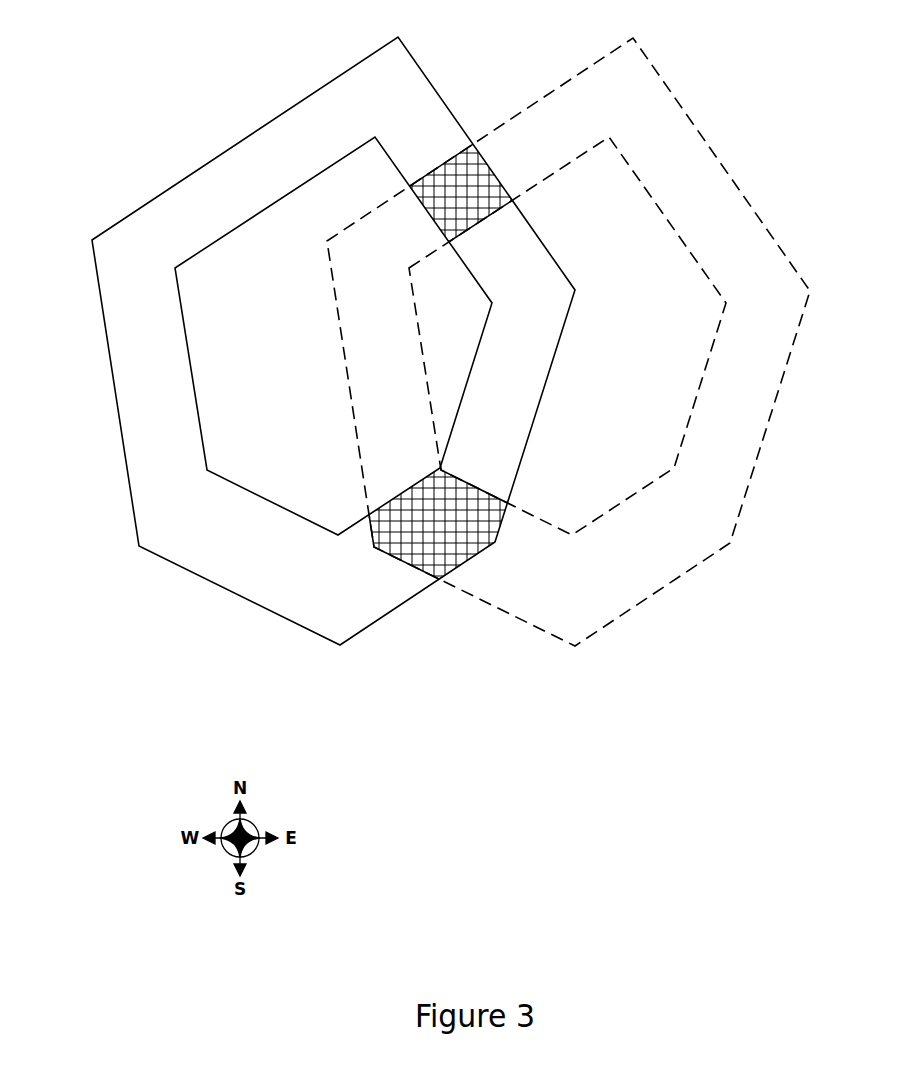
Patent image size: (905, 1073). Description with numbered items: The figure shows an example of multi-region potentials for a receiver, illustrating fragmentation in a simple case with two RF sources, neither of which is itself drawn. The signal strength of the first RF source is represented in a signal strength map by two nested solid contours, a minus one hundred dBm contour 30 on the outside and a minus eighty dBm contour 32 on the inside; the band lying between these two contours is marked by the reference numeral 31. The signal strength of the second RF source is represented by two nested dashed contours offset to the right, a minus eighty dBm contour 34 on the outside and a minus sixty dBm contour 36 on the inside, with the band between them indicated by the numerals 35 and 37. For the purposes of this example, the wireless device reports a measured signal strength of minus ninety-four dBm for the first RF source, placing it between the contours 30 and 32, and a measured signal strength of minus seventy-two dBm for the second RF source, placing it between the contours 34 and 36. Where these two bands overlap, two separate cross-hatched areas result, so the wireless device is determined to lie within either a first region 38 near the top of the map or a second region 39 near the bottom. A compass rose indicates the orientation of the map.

The −100 dBm contour 30 is at (92, 240).
The signal strength region between contours of first base station 31 is at (252, 150).
The −80 dBm contour 32 is at (175, 268).
The −80 dBm contour 34 is at (633, 38).
The signal strength region of second base station 35 is at (713, 199).
The −60 dBm contour 36 is at (611, 137).
The signal strength region between contours of second base station 37 is at (672, 399).
The first region 38 is at (468, 157).
The second region 39 is at (441, 570).